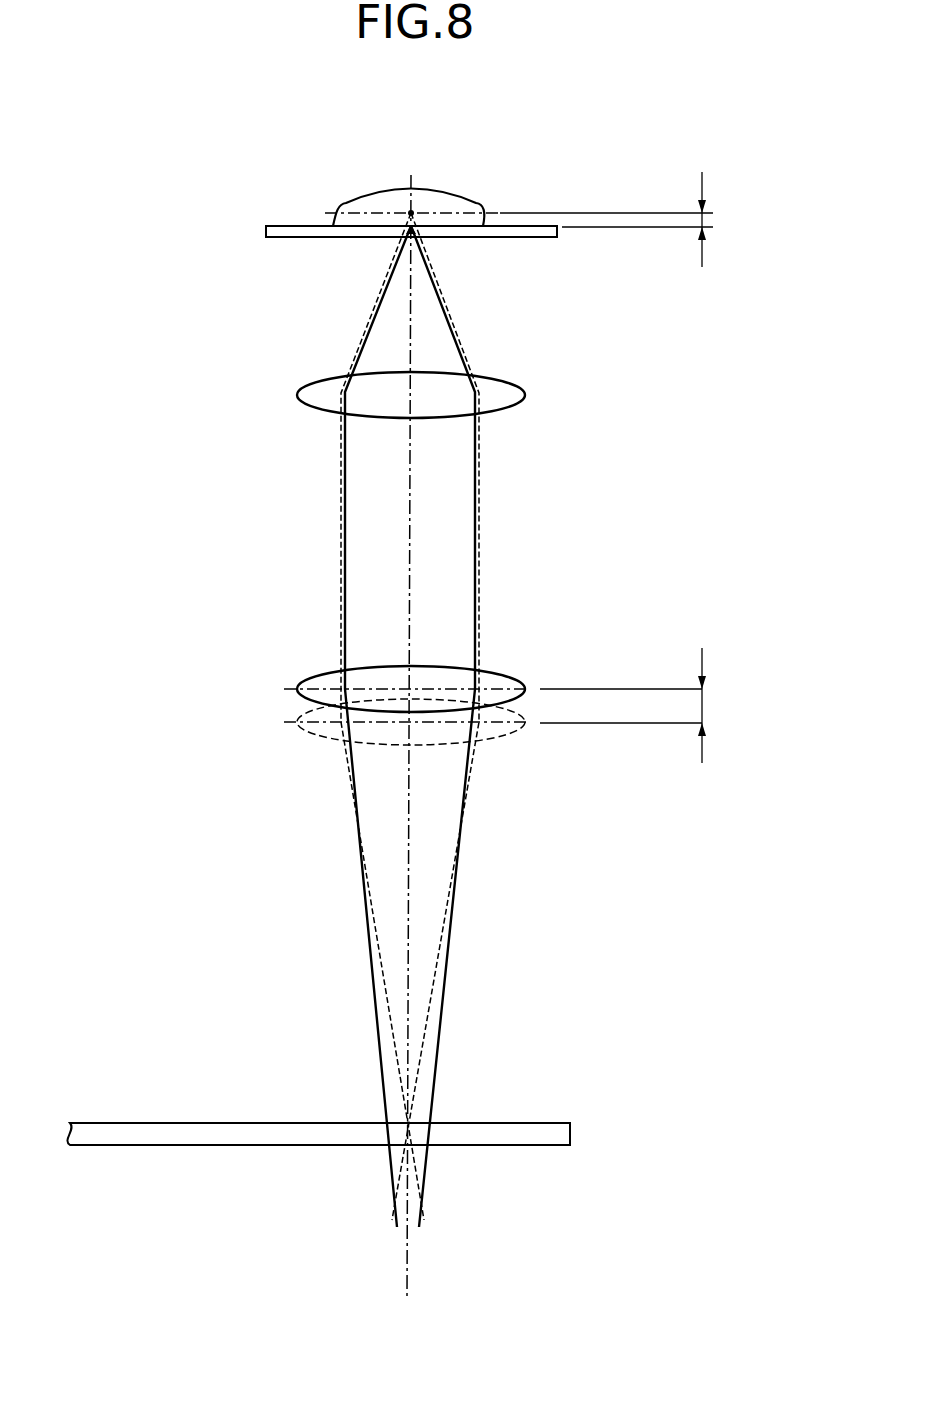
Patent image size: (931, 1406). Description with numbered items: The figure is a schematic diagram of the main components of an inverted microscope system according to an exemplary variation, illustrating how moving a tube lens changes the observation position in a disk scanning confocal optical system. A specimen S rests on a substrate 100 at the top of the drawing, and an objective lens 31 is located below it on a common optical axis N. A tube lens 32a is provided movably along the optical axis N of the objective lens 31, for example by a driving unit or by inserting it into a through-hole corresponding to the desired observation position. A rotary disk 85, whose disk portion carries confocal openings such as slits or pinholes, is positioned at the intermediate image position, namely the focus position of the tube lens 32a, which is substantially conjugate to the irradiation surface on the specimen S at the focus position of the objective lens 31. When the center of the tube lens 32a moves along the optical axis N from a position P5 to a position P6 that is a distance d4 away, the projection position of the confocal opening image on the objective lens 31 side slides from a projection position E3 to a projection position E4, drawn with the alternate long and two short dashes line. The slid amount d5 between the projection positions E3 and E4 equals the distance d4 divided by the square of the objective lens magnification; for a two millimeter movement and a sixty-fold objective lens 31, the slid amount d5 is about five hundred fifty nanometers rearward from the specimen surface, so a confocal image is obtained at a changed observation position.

The substrate 100 is at (281, 225).
The specimen S is at (440, 197).
The projection position E4 is at (411, 213).
The projection position E3 is at (420, 228).
The slid amount d5 is at (702, 220).
The objective lens 31 is at (526, 394).
The optical axis N is at (411, 535).
The tube lens 32a is at (500, 673).
The position P5 is at (607, 688).
The position P6 is at (617, 725).
The distance d4 is at (702, 705).
The rotary disk 85 is at (491, 1146).